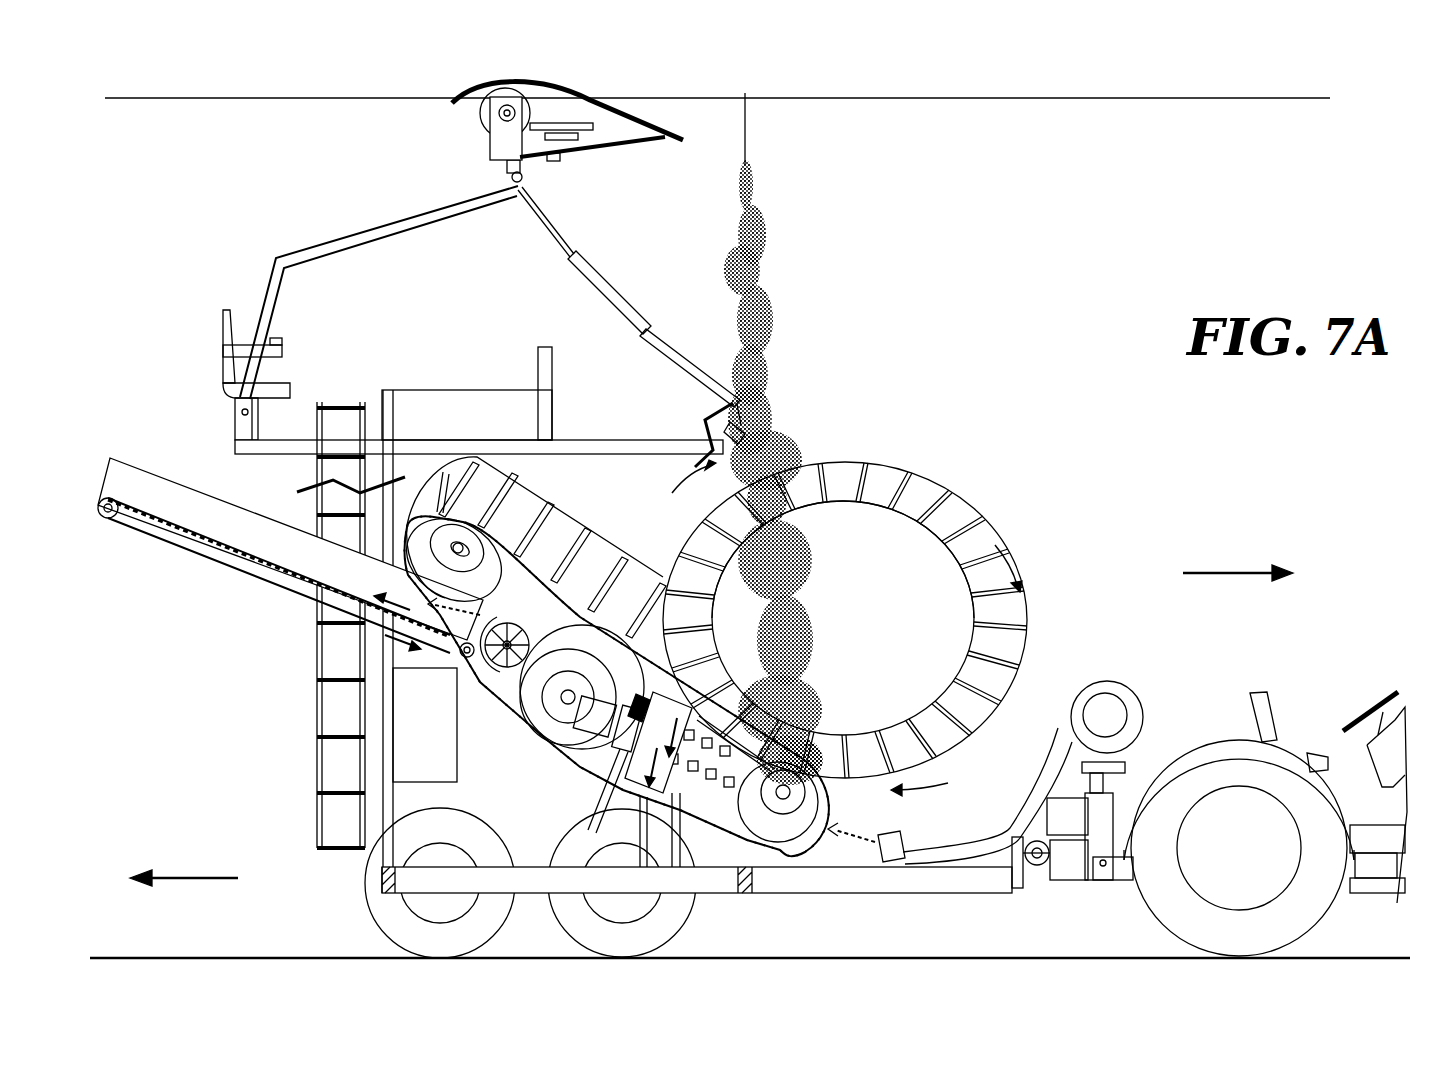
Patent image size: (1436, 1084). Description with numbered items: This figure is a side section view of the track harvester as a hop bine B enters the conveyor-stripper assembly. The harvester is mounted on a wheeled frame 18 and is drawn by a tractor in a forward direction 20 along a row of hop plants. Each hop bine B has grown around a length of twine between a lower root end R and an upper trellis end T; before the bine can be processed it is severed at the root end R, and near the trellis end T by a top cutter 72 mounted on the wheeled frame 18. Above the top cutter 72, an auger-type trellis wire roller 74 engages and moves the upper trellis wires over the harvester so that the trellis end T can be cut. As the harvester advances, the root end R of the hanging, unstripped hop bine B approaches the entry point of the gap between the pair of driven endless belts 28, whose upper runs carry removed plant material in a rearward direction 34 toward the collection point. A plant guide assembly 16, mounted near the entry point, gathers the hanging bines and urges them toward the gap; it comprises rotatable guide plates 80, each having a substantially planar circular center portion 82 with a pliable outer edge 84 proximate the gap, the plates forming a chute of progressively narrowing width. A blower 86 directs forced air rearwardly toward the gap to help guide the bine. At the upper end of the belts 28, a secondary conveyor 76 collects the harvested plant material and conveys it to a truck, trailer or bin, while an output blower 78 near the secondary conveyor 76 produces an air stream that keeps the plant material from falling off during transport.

The trellis wire roller 74 is at (517, 93).
The top cutter 72 is at (590, 120).
The trellis end T is at (746, 130).
The hop bine B is at (770, 250).
The plant guide assembly 16 is at (903, 470).
The rotatable guide plates 80 is at (895, 557).
The circular center portion 82 is at (892, 637).
The pliable outer edge 84 is at (995, 612).
The blower 86 is at (1117, 693).
The forward direction 20 is at (1236, 572).
The driven endless belts 28 is at (565, 528).
The secondary conveyor 76 is at (213, 540).
The output blower 78 is at (500, 657).
The rearward direction 34 is at (187, 877).
The wheeled frame 18 is at (947, 885).
The root end R is at (798, 755).